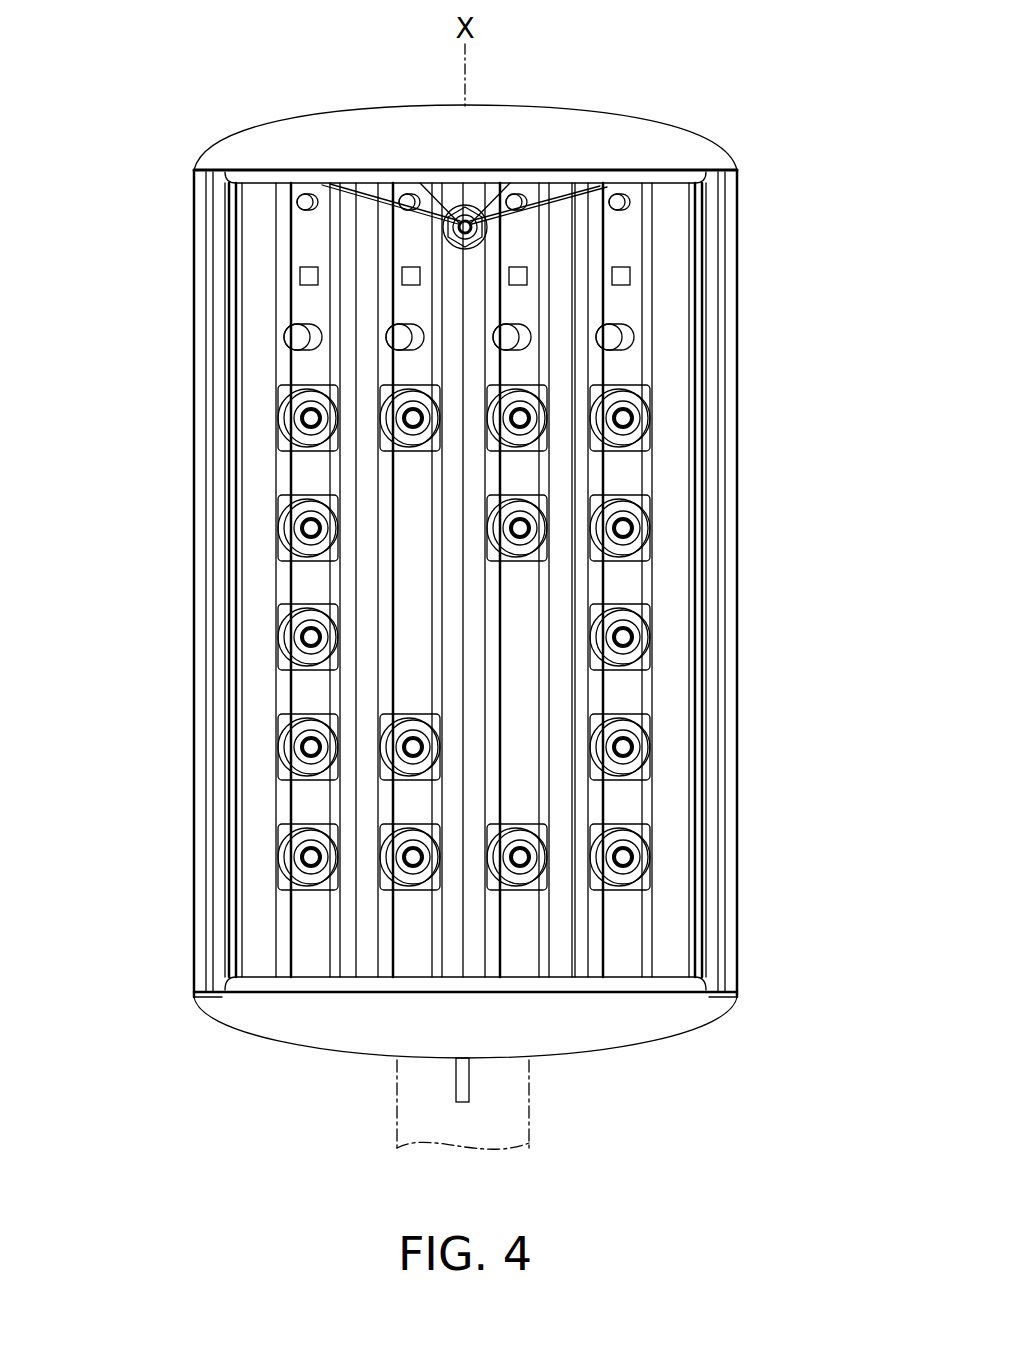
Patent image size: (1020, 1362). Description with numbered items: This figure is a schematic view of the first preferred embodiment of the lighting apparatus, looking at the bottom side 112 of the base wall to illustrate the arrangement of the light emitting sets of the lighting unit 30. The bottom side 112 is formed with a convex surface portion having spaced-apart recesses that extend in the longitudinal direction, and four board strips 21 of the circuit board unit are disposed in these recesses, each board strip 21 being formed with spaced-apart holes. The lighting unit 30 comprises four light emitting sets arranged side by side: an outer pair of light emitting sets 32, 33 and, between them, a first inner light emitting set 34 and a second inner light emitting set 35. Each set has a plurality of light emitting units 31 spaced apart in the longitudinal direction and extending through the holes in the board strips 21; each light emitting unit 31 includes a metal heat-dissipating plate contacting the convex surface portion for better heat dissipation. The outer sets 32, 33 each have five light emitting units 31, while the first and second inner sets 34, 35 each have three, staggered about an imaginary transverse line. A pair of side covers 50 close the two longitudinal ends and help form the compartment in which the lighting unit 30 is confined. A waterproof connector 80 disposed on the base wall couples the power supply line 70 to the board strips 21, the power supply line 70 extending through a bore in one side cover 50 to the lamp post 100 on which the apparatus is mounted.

The board strip 21 is at (302, 234).
The lighting unit 30 is at (385, 650).
The light emitting unit 31 is at (283, 420).
The outer light emitting set 32 is at (237, 643).
The outer light emitting set 33 is at (620, 895).
The first inner light emitting set 34 is at (410, 895).
The second inner light emitting set 35 is at (518, 895).
The side cover 50 is at (543, 105).
The power supply line 70 is at (474, 1088).
The waterproof connector 80 is at (458, 220).
The lamp post 100 is at (384, 1143).
The bottom side 112 is at (678, 192).